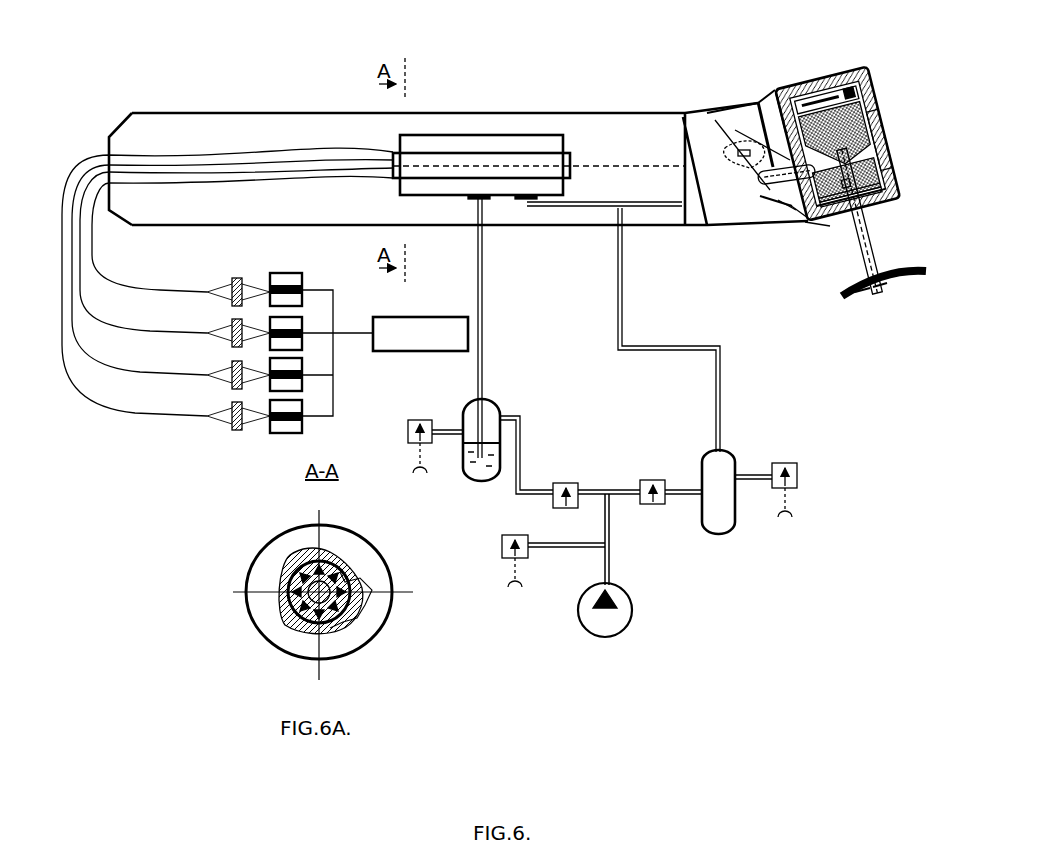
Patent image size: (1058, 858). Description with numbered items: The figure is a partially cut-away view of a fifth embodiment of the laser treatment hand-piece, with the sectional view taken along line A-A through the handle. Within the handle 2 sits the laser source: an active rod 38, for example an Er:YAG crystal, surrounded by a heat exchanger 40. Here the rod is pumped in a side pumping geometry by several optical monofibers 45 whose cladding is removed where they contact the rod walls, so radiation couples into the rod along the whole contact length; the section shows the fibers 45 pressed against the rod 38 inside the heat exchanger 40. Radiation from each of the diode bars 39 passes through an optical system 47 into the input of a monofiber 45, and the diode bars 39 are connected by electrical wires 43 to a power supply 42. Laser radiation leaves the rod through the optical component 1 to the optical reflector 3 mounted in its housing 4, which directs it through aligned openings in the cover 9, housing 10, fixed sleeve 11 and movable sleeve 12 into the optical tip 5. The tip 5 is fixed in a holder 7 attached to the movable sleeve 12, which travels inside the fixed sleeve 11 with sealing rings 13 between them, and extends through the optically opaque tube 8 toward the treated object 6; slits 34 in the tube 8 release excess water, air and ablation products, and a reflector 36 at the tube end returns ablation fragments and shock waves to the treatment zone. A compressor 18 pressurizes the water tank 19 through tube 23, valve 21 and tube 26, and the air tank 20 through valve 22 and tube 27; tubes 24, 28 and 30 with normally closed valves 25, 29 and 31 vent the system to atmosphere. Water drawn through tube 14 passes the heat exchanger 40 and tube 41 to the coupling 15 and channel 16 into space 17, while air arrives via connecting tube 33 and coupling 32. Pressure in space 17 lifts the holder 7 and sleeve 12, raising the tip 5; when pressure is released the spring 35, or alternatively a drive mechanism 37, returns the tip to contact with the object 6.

In FIG. 6, the optical fiber 1 is at (690, 118).
In FIG. 6, the handle 2 is at (600, 133).
In FIG. 6, the optical reflector 3 is at (837, 144).
In FIG. 6, the housing 4 is at (781, 112).
In FIG. 6, the optical tip 5 is at (846, 183).
In FIG. 6, the object 6 is at (905, 278).
In FIG. 6, the holder 7 is at (849, 190).
In FIG. 6, the optically opaque tube 8 is at (860, 221).
In FIG. 6, the cover 9 is at (851, 197).
In FIG. 6, the housing 10 is at (847, 180).
In FIG. 6, the fixed sleeve 11 is at (879, 139).
In FIG. 6, the movable sleeve 12 is at (851, 197).
In FIG. 6, the sealing rings 13 is at (835, 137).
In FIG. 6, the tube 14 is at (478, 268).
In FIG. 6, the coupling 15 is at (758, 130).
In FIG. 6, the channel 16 is at (812, 222).
In FIG. 6, the space 17 is at (832, 232).
In FIG. 6, the compressor 18 is at (636, 612).
In FIG. 6, the water tank 19 is at (490, 410).
In FIG. 6, the air tank 20 is at (737, 518).
In FIG. 6, the valve 21 is at (567, 483).
In FIG. 6, the valve 22 is at (653, 480).
In FIG. 6, the tube 23 is at (610, 565).
In FIG. 6, the tube 24 is at (572, 548).
In FIG. 6, the valve 25 is at (502, 548).
In FIG. 6, the tube 26 is at (522, 458).
In FIG. 6, the tube 27 is at (684, 486).
In FIG. 6, the tube 28 is at (452, 428).
In FIG. 6, the valve 29 is at (415, 420).
In FIG. 6, the tube 30 is at (742, 470).
In FIG. 6, the valve 31 is at (797, 470).
In FIG. 6, the coupling 32 is at (797, 212).
In FIG. 6, the connecting tube 33 is at (630, 270).
In FIG. 6, the slits 34 is at (882, 284).
In FIG. 6, the spring 35 is at (827, 100).
In FIG. 6, the reflector 36 is at (849, 93).
In FIG. 6, the drive mechanism 37 is at (862, 288).
In FIG. 6, the active rod 38 is at (440, 160).
In FIG. 6A, the active rod 38 is at (338, 548).
In FIG. 6, the diode bars 39 is at (302, 283).
In FIG. 6, the heat exchanger 40 is at (505, 135).
In FIG. 6A, the heat exchanger 40 is at (285, 615).
In FIG. 6, the tube 41 is at (598, 207).
In FIG. 6, the power supply 42 is at (388, 326).
In FIG. 6, the electrical wires 43 is at (340, 336).
In FIG. 6, the optical monofibers 45 is at (118, 402).
In FIG. 6A, the optical monofibers 45 is at (362, 618).
In FIG. 6, the optical system 47 is at (236, 432).